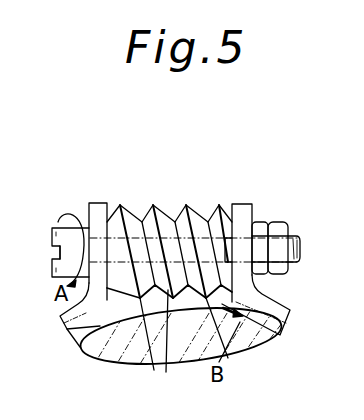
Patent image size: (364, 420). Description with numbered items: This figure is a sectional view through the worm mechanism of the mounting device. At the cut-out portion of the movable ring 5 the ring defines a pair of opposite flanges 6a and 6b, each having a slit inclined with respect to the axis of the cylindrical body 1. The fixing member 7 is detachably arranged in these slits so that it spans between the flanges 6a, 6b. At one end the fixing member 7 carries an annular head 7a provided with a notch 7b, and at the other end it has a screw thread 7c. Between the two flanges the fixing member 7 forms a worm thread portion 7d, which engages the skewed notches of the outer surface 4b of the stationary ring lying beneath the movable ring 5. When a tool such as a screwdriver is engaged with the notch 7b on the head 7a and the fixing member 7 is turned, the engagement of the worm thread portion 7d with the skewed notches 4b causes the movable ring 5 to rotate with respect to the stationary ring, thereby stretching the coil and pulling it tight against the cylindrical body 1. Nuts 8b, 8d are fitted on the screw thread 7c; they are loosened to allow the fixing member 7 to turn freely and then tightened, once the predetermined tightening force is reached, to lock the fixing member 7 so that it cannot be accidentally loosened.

The cylindrical body 1 is at (106, 352).
The outer surface with skewed notches 4b is at (161, 364).
The movable ring 5 is at (280, 299).
The flange 6a is at (240, 212).
The flange 6b is at (97, 210).
The fixing member 7 is at (156, 195).
The annular head 7a is at (52, 220).
The notch 7b is at (53, 251).
The screw thread 7c is at (300, 262).
The worm thread portion 7d is at (162, 218).
The nut 8b is at (279, 226).
The nut 8d is at (262, 222).